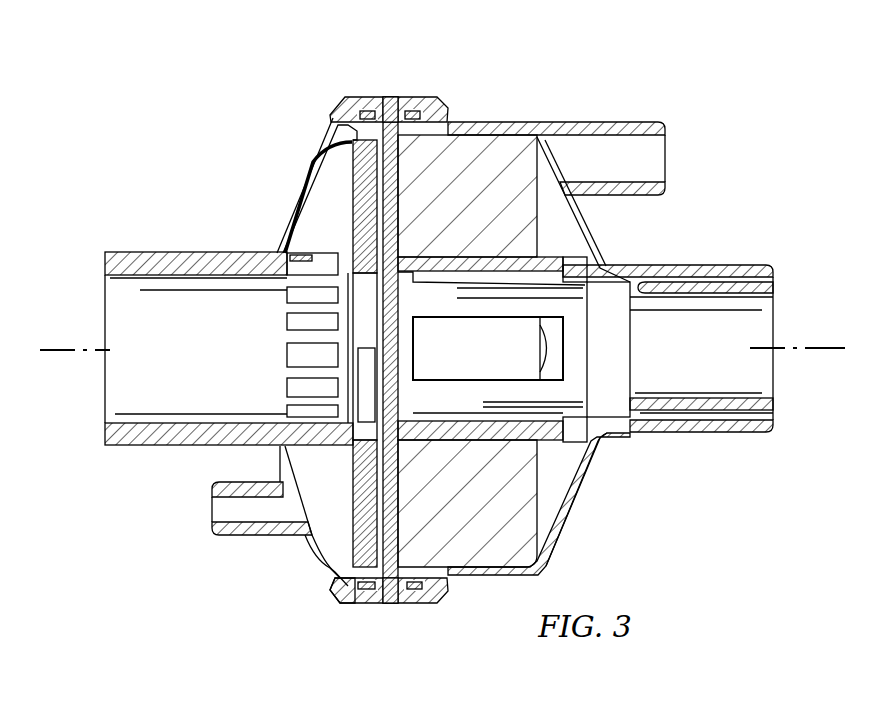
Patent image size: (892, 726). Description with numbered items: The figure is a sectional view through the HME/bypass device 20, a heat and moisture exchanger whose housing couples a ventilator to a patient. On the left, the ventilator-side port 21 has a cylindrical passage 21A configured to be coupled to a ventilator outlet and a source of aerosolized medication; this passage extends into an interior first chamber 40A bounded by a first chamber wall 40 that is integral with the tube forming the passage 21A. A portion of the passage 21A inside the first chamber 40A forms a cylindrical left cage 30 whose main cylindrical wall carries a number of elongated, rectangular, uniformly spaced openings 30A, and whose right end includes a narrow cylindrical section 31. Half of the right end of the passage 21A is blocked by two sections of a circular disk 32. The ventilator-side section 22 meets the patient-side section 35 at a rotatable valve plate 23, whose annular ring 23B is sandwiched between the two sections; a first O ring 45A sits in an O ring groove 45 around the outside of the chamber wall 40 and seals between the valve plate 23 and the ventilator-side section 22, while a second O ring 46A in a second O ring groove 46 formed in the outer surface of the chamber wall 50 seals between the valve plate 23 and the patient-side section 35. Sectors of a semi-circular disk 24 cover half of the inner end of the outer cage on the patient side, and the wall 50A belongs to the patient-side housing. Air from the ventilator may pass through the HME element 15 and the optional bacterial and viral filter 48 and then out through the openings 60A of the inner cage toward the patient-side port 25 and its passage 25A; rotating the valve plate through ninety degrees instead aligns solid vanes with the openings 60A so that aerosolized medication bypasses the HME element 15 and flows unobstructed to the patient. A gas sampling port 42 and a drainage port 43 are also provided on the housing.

The HME element 15 is at (457, 208).
The HME/bypass device 20 is at (150, 575).
The ventilator-side port 21 is at (163, 252).
The cylindrical passage 21A is at (188, 363).
The ventilator-side section 22 is at (300, 556).
The valve plate 23 is at (420, 97).
The annular ring 23B is at (386, 97).
The semi-circular disk 24 is at (392, 400).
The patient-side port 25 is at (748, 265).
The patient-side passage 25A is at (722, 363).
The left cage 30 is at (290, 336).
The openings 30A is at (290, 358).
The narrow cylindrical section 31 is at (363, 306).
The circular disk 32 is at (378, 340).
The patient-side section 35 is at (575, 522).
The first chamber wall 40 is at (290, 226).
The first chamber 40A is at (300, 185).
The gas sampling port 42 is at (215, 512).
The drainage port 43 is at (662, 160).
The O ring groove 45 is at (338, 592).
The O ring 45A is at (370, 603).
The second O ring groove 46 is at (446, 590).
The second O ring 46A is at (415, 603).
The bacterial and viral filter 48 is at (356, 208).
The chamber wall 50 is at (598, 478).
The diagonal housing wall 50A is at (579, 226).
The openings 60A is at (470, 378).